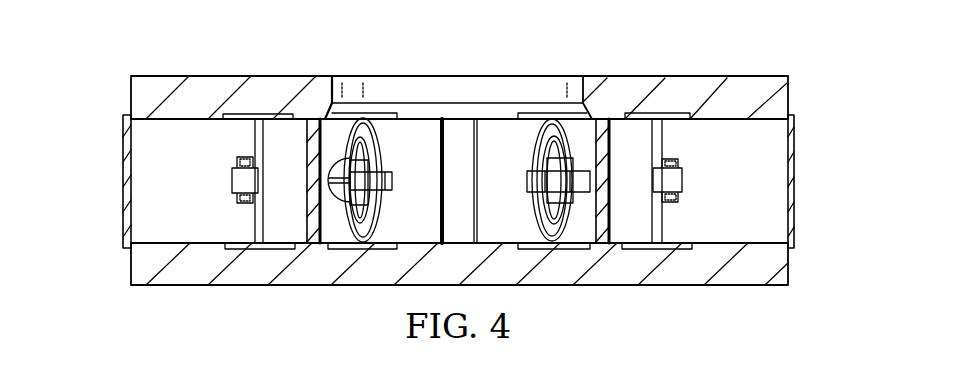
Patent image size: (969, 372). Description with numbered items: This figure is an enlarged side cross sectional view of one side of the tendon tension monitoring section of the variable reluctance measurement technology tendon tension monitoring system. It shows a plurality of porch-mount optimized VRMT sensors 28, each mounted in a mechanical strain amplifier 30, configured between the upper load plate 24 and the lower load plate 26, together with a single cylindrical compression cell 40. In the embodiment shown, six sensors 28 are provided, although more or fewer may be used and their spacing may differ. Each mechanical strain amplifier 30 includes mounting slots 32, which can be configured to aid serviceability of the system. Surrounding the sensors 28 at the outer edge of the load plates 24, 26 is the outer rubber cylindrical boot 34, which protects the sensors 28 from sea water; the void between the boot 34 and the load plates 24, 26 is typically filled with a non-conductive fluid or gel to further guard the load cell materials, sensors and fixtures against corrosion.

The upper load plate 24 is at (138, 98).
The lower load plate 26 is at (138, 265).
The porch-mount optimized VRMT sensor 28 is at (675, 180).
The mechanical strain amplifier 30 is at (685, 92).
The mechanical amplifier strain gauge mounting slot 32 is at (647, 116).
The outer rubber cylindrical boot 34 is at (123, 177).
The cylindrical compression cell 40 is at (307, 210).